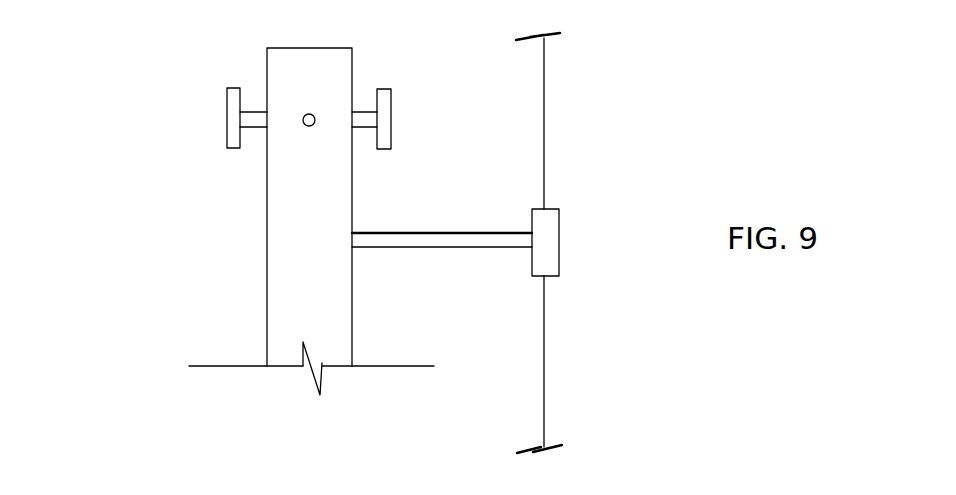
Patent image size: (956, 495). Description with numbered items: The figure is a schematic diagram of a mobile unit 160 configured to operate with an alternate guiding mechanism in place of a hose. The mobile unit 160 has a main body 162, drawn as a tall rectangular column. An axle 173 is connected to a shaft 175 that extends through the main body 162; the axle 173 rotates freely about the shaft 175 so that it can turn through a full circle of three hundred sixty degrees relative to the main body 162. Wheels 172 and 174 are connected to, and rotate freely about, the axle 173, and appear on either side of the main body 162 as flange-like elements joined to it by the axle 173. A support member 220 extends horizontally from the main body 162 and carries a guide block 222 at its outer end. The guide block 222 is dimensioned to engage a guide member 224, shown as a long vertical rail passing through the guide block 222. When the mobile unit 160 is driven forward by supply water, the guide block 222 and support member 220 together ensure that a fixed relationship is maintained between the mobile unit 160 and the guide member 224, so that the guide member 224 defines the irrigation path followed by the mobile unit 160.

The mobile unit 160 is at (124, 119).
The main body 162 is at (278, 308).
The wheel 172 is at (235, 105).
The axle 173 is at (253, 117).
The wheel 174 is at (382, 102).
The shaft 175 is at (313, 115).
The support member 220 is at (391, 240).
The guide block 222 is at (550, 255).
The guide member 224 is at (544, 98).